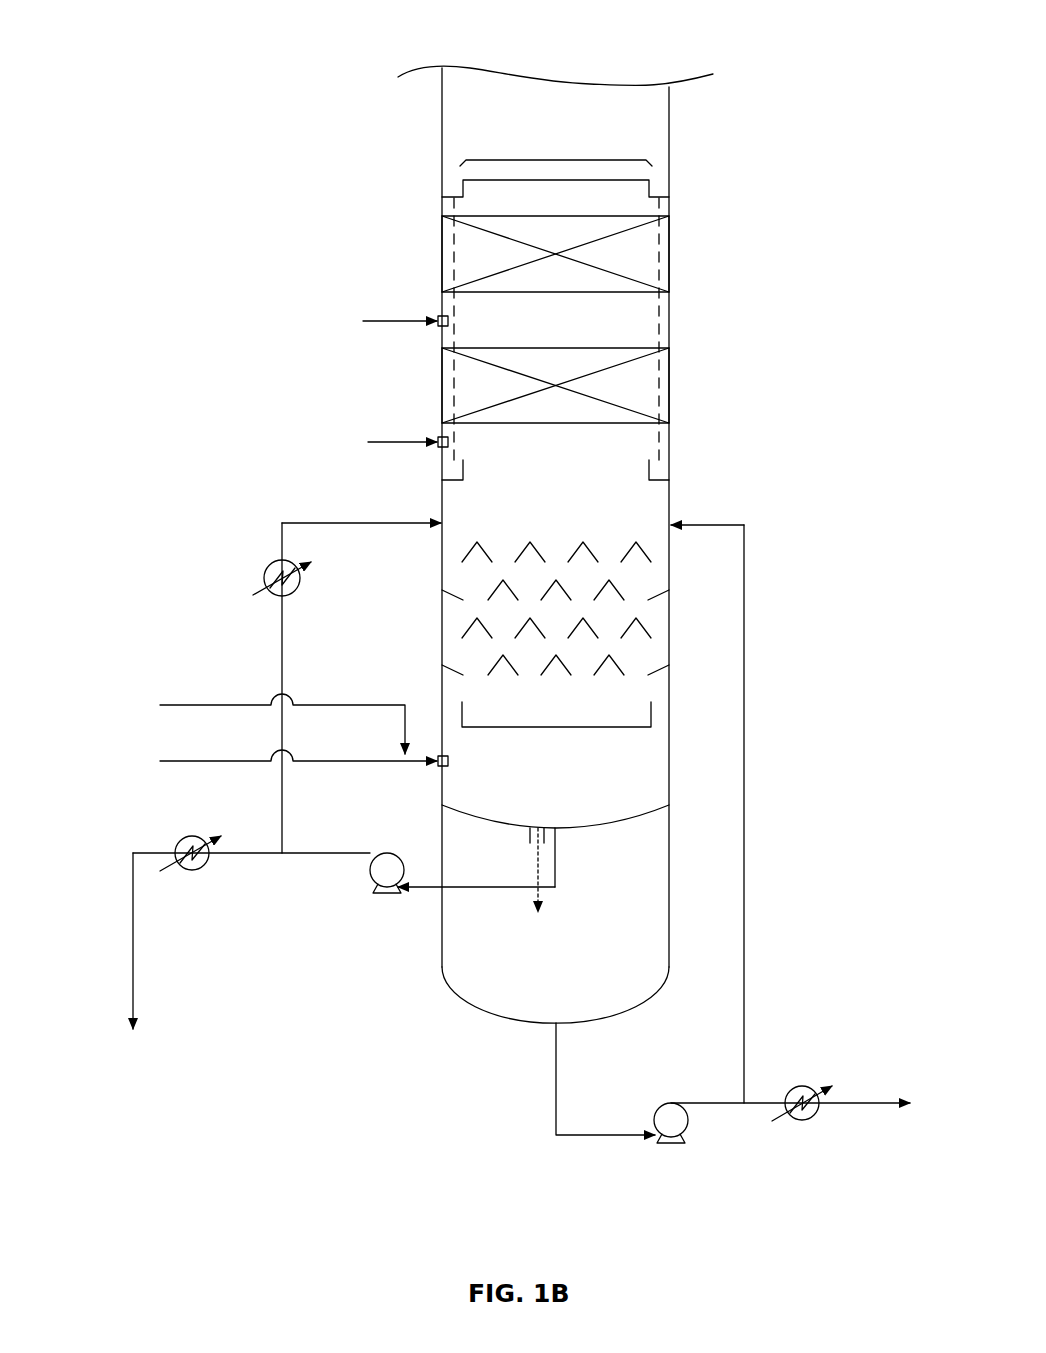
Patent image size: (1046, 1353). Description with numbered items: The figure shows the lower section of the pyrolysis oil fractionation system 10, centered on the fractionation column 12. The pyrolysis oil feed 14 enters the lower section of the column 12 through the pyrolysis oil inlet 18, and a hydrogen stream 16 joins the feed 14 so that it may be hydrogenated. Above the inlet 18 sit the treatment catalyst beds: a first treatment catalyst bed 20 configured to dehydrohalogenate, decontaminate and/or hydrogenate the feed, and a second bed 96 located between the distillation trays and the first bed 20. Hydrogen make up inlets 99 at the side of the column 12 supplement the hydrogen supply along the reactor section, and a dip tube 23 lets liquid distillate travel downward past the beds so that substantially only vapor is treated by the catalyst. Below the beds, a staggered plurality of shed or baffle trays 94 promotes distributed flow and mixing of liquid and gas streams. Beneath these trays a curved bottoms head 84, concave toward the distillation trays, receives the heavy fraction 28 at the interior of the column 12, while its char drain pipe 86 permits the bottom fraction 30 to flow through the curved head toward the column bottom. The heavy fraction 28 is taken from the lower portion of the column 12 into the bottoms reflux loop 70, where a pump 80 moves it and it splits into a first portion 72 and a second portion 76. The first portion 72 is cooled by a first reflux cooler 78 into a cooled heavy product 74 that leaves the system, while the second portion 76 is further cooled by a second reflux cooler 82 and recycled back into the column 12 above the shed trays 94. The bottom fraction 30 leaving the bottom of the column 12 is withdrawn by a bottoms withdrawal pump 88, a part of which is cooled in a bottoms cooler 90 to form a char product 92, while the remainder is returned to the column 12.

The pyrolysis oil fractionation system 10 is at (188, 58).
The fractionation column 12 is at (434, 133).
The dip tube 23 is at (450, 270).
The second bed 96 is at (642, 258).
The treatment catalyst bed 20 is at (645, 385).
The hydrogen make up inlet 99 is at (438, 428).
The bottoms reflux loop 70 is at (350, 518).
The second reflux cooler 82 is at (270, 564).
The shed or baffle trays 94 is at (472, 551).
The second portion 76 is at (282, 668).
The pyrolysis oil feed 14 is at (218, 705).
The hydrogen stream 16 is at (218, 761).
The pyrolysis oil inlet 18 is at (440, 754).
The heavy fraction 28 is at (435, 887).
The char drain pipe 86 is at (530, 835).
The bottoms head 84 is at (635, 822).
The first reflux cooler 78 is at (200, 870).
The first portion 72 is at (243, 856).
The pump 80 is at (372, 875).
The cooled heavy product 74 is at (133, 937).
The bottom fraction 30 is at (555, 1082).
The bottoms withdrawal pump 88 is at (672, 1103).
The bottoms cooler 90 is at (800, 1087).
The char product 92 is at (865, 1103).